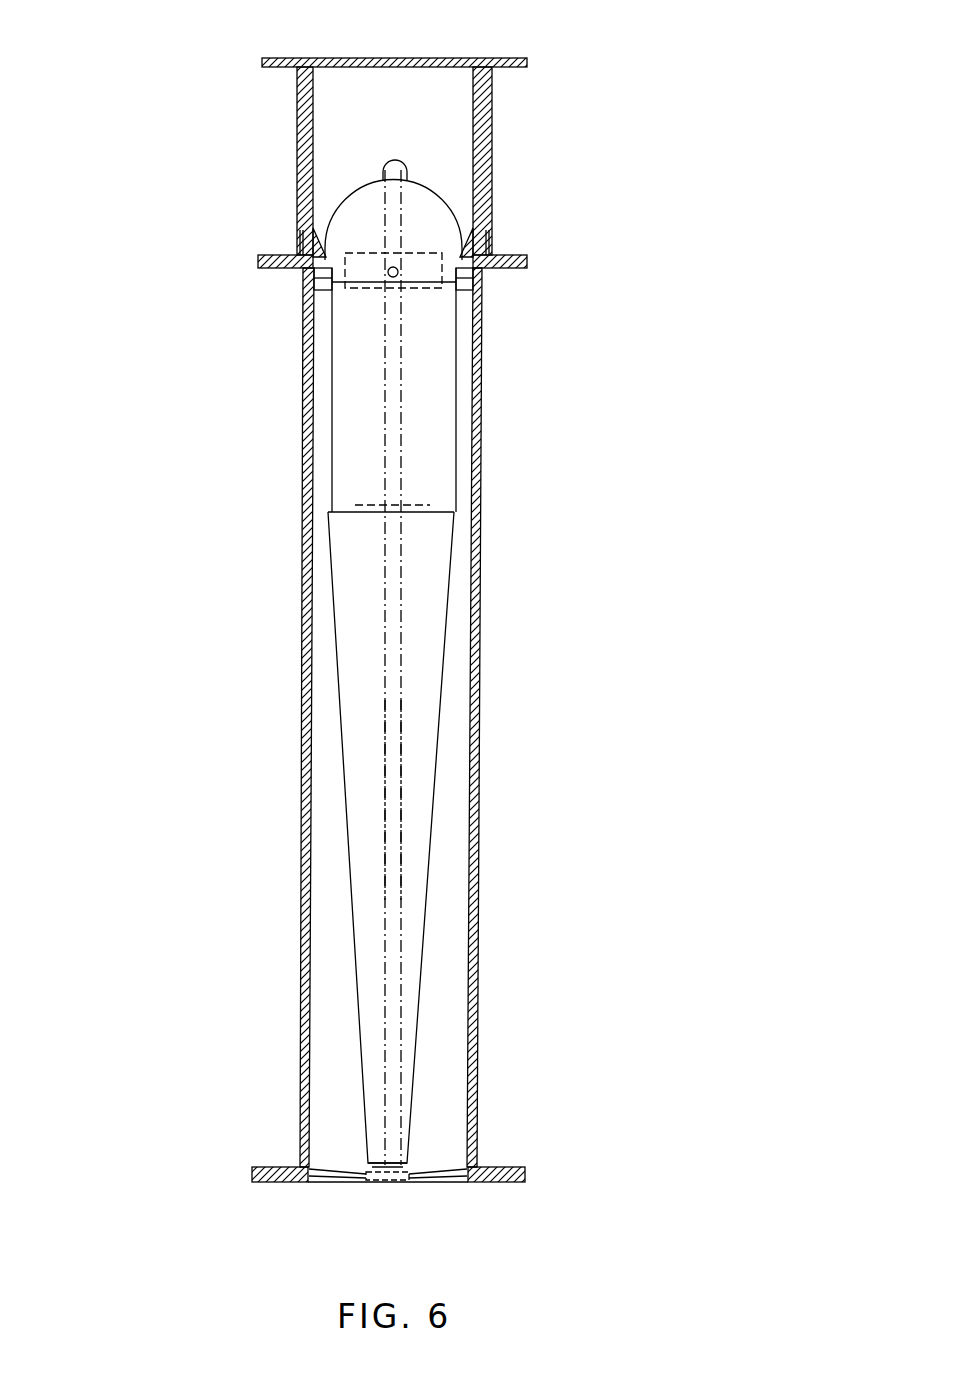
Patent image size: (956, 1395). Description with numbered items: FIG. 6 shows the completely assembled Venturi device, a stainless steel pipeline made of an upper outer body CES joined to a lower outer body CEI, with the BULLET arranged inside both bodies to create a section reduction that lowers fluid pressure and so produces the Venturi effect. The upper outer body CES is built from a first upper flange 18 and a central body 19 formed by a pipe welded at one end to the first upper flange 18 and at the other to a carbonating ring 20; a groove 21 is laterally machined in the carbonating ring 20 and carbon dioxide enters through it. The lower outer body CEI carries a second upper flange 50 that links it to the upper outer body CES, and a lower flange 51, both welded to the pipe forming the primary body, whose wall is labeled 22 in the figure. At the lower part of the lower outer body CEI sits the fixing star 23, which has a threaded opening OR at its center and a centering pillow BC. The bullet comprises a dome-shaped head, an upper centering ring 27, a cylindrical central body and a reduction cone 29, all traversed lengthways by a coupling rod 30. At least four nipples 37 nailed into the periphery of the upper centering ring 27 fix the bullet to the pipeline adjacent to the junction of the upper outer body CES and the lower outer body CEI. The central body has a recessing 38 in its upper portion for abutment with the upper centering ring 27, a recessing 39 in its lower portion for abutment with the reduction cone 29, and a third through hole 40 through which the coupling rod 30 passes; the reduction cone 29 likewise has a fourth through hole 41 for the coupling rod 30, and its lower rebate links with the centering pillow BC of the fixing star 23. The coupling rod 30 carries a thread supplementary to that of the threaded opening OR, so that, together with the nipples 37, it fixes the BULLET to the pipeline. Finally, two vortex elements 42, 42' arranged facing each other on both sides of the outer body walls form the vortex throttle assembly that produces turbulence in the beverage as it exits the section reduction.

The first upper flange 18 is at (527, 64).
The central body 19 is at (297, 152).
The upper outer body CES is at (492, 150).
The vortex element 42 is at (263, 221).
The vortex element 42' is at (566, 242).
The carbonating ring 20 is at (262, 258).
The groove 21 is at (484, 246).
The second upper flange 50 is at (527, 268).
The nipples 37 is at (345, 278).
The upper centering ring 27 is at (440, 283).
The central body recessing 38 is at (332, 322).
The third through hole 40 is at (405, 385).
The central body recessing 39 is at (357, 506).
The bullet BULLET is at (360, 661).
The reduction cone 29 is at (462, 625).
The coupling rod 30 is at (395, 788).
The fourth through hole 41 is at (385, 795).
The lower tube wall 22 is at (303, 920).
The lower outer body CEI is at (480, 855).
The lower flange 51 is at (525, 1175).
The fixing star 23 is at (330, 1192).
The threaded opening OR is at (393, 1185).
The centering pillow BC is at (422, 1172).